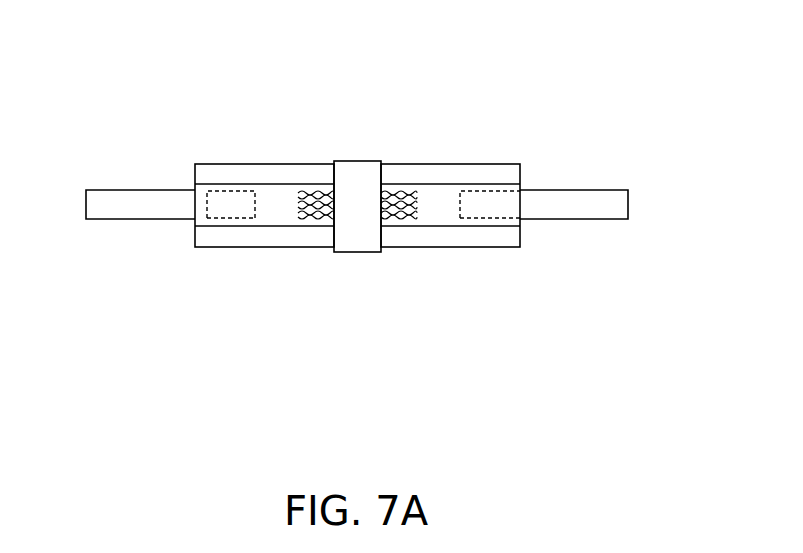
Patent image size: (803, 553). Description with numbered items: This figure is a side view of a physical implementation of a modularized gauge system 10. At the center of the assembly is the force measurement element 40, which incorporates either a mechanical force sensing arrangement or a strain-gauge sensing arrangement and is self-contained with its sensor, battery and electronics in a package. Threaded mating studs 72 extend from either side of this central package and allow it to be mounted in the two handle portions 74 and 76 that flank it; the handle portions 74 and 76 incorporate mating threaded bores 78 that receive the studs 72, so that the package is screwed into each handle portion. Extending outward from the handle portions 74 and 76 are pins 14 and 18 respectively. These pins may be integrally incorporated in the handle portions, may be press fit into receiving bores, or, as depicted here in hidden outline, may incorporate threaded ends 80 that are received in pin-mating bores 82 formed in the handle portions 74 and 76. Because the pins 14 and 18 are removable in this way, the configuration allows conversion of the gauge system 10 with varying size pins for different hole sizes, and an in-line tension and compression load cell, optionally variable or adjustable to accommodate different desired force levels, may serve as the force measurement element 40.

The gauge system 10 is at (354, 116).
The pin 14 is at (119, 197).
The pin 18 is at (568, 195).
The force measurement element 40 is at (357, 239).
The threaded mating studs 72 is at (312, 216).
The handle portion 74 is at (252, 174).
The handle portion 76 is at (487, 174).
The mating threaded bores 78 is at (323, 224).
The threaded ends 80 is at (217, 209).
The pin-mating bores 82 is at (232, 221).